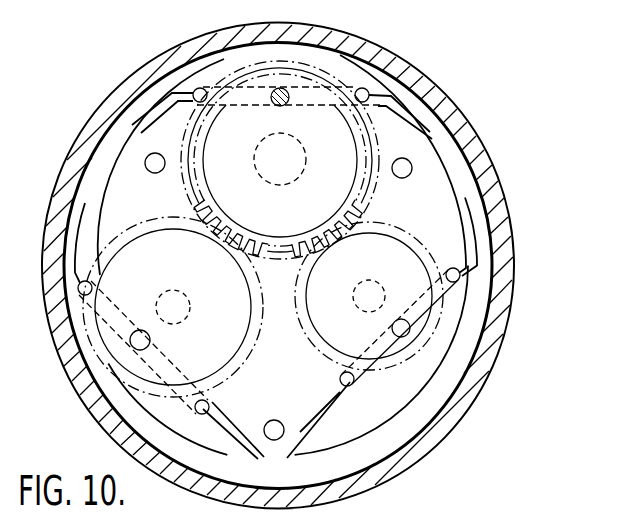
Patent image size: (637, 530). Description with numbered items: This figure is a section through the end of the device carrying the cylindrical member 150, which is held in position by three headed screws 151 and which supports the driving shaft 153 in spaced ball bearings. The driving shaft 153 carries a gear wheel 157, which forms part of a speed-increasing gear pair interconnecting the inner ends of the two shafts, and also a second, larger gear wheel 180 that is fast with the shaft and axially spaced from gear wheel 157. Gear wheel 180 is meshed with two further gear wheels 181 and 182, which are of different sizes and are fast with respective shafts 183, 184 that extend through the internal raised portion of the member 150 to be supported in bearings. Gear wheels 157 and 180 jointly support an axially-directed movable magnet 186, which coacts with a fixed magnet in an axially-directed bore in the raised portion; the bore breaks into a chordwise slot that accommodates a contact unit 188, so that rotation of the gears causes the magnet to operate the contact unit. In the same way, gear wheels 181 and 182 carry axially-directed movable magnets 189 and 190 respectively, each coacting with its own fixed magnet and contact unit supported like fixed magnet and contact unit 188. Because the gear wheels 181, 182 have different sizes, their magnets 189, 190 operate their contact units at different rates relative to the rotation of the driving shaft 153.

The cylindrical member 150 is at (312, 24).
The gear wheel 157 is at (372, 58).
The second gear wheel 180 is at (238, 72).
The driving shaft 153 is at (293, 182).
The contact unit 188 is at (198, 84).
The movable magnet 186 is at (279, 90).
The headed screws 151 is at (147, 157).
The shaft 184 is at (174, 290).
The shaft 183 is at (370, 280).
The movable magnet 190 is at (150, 340).
The movable magnet 189 is at (409, 330).
The gear wheel 182 is at (98, 362).
The gear wheel 181 is at (443, 321).